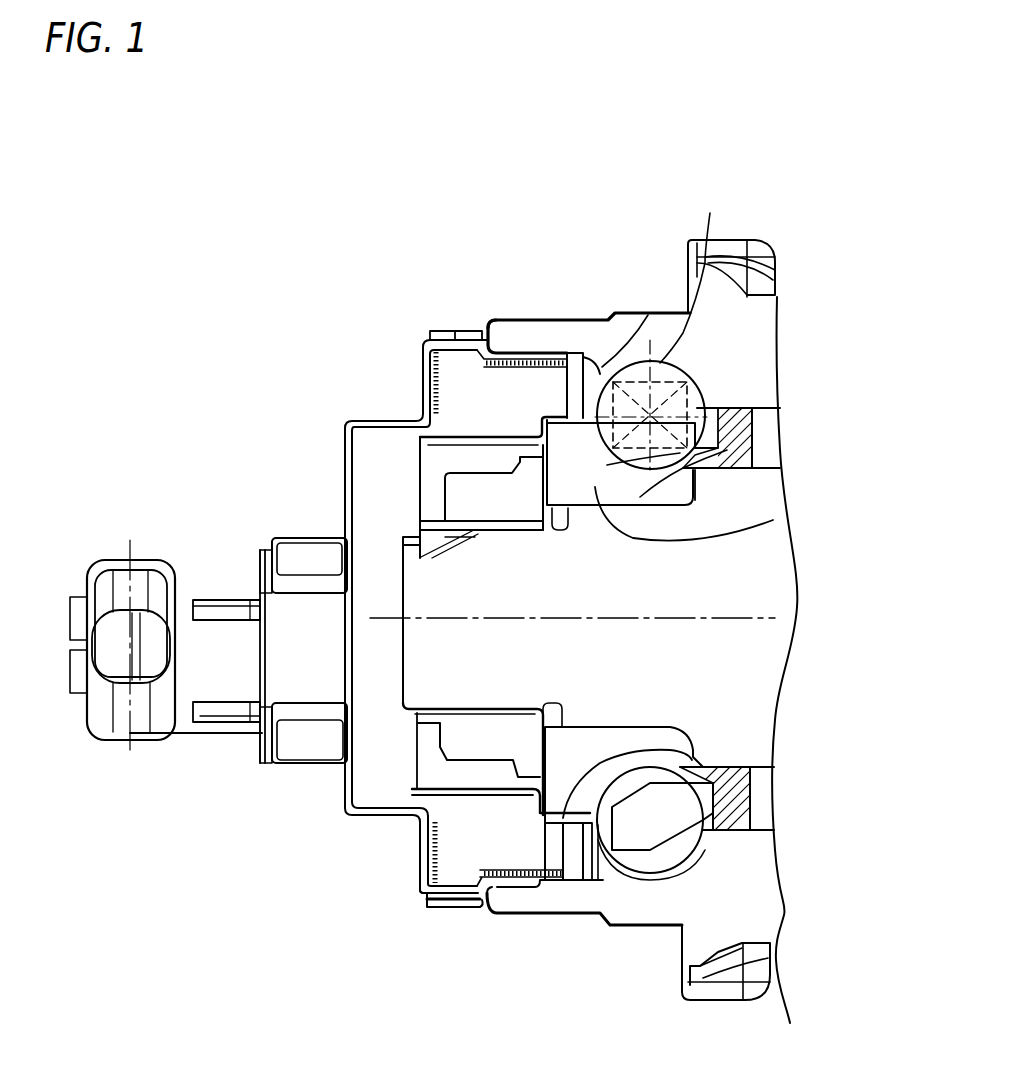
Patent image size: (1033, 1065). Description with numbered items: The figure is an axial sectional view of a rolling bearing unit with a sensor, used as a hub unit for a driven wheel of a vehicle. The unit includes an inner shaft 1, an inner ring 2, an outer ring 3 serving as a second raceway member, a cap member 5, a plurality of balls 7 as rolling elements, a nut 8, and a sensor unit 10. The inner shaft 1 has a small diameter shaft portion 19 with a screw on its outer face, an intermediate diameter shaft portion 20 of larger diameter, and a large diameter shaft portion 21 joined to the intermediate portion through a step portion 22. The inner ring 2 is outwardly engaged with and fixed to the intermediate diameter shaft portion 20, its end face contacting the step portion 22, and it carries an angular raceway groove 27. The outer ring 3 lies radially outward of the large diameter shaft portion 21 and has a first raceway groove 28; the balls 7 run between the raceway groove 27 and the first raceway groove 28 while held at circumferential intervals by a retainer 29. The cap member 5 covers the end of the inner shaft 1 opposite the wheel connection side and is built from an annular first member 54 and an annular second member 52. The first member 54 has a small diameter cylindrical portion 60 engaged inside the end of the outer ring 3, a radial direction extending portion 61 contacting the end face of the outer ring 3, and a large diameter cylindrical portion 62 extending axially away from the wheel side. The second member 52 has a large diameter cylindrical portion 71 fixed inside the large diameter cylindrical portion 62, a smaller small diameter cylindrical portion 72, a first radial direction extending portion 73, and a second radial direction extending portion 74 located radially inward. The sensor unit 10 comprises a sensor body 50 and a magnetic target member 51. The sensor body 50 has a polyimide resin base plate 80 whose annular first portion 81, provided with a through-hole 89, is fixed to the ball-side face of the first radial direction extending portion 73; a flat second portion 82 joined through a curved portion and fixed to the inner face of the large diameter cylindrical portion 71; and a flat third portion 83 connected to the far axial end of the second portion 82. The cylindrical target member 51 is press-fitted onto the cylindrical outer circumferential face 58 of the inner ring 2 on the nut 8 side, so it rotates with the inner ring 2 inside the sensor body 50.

The inner shaft 1 is at (442, 590).
The inner ring 2 is at (773, 520).
The outer ring 3 is at (628, 905).
The cap member 5 is at (343, 812).
The balls 7 is at (731, 241).
The nut 8 is at (462, 492).
The sensor unit 10 is at (417, 893).
The small diameter shaft portion 19 is at (347, 730).
The intermediate diameter shaft portion 20 is at (697, 467).
The large diameter shaft portion 21 is at (762, 782).
The step portion 22 is at (553, 823).
The raceway groove 27 is at (677, 412).
The first raceway groove 28 is at (697, 373).
The retainer 29 is at (622, 838).
The sensor body 50 is at (505, 369).
The target member 51 is at (418, 847).
The second member 52 is at (343, 447).
The first member 54 is at (478, 318).
The cylindrical outer circumferential face 58 is at (656, 312).
The small diameter cylindrical portion 60 is at (587, 318).
The radial direction extending portion 61 is at (500, 913).
The large diameter cylindrical portion 62 is at (440, 908).
The large diameter cylindrical portion 71 is at (455, 328).
The small diameter cylindrical portion 72 is at (382, 422).
The first radial direction extending portion 73 is at (422, 352).
The second radial direction extending portion 74 is at (350, 487).
The base plate 80 is at (428, 873).
The first portion 81 is at (428, 858).
The second portion 82 is at (452, 908).
The third portion 83 is at (527, 863).
The through-hole 89 is at (410, 798).